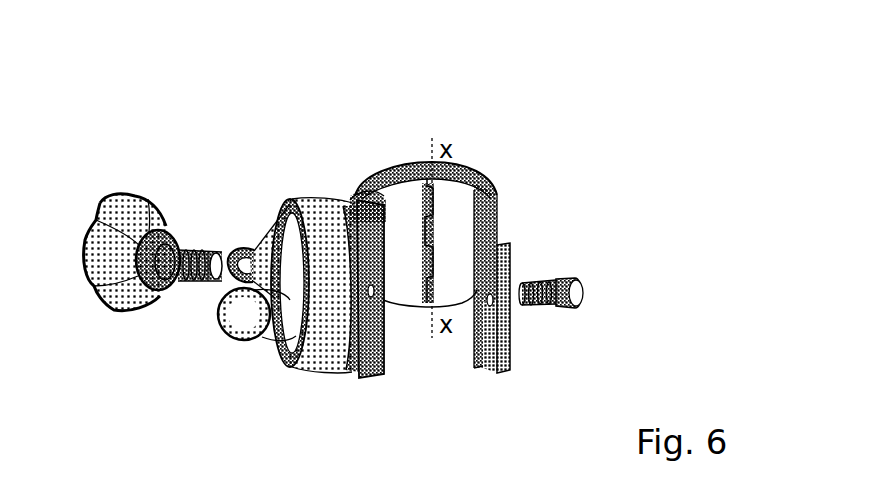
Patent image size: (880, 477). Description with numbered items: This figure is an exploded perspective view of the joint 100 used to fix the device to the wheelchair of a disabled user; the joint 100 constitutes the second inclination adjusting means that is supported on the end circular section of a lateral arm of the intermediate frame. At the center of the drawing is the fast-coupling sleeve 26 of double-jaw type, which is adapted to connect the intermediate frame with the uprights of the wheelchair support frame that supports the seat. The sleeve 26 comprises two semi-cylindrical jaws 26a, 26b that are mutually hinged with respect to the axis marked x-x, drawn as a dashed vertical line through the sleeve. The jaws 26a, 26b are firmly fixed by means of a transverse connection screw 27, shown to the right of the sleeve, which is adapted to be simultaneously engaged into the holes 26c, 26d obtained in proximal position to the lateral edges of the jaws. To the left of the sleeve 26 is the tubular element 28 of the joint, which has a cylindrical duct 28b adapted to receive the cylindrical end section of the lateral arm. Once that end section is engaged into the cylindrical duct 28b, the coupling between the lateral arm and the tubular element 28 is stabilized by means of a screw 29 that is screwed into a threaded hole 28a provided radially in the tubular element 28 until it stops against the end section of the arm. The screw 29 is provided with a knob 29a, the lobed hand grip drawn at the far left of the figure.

The joint 100 is at (303, 160).
The fast-coupling sleeve 26 is at (400, 157).
The semi-cylindrical jaw 26a is at (375, 167).
The semi-cylindrical jaw 26b is at (493, 186).
The hole 26c is at (369, 296).
The hole 26d is at (491, 305).
The transverse connection screw 27 is at (581, 290).
The tubular element 28 is at (288, 236).
The threaded hole 28a is at (238, 252).
The cylindrical duct 28b is at (247, 326).
The screw 29 is at (198, 270).
The knob 29a is at (124, 194).